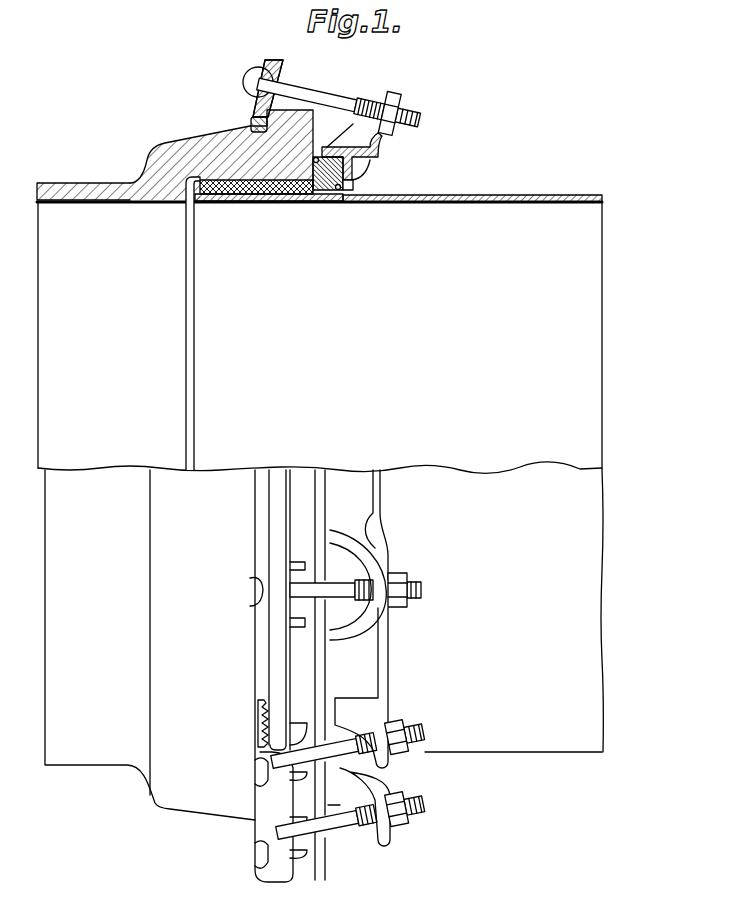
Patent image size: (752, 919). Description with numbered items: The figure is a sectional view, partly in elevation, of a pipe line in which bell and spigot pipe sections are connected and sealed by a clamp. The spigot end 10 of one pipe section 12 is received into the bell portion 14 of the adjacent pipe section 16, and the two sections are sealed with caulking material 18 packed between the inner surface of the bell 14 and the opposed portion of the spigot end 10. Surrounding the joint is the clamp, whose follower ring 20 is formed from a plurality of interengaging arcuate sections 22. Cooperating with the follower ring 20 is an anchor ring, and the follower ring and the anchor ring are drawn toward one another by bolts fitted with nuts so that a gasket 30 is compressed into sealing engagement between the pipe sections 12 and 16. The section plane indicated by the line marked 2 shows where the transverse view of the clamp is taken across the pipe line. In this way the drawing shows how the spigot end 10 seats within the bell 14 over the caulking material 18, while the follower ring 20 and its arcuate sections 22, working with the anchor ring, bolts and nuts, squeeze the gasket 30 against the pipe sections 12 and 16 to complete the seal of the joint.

The section line 2- 2 is at (444, 193).
The spigot end 10 is at (231, 201).
The pipe section 12 is at (500, 195).
The bell portion 14 is at (200, 138).
The pipe section 16 is at (75, 182).
The caulking material 18 is at (287, 194).
The follower ring 20 is at (376, 160).
The arcuate sections 22 is at (354, 183).
The gasket 30 is at (324, 196).